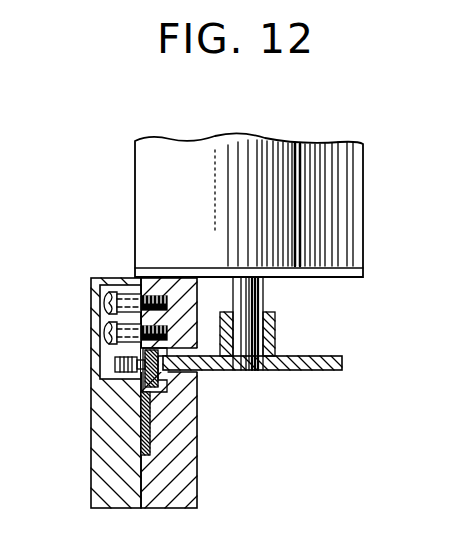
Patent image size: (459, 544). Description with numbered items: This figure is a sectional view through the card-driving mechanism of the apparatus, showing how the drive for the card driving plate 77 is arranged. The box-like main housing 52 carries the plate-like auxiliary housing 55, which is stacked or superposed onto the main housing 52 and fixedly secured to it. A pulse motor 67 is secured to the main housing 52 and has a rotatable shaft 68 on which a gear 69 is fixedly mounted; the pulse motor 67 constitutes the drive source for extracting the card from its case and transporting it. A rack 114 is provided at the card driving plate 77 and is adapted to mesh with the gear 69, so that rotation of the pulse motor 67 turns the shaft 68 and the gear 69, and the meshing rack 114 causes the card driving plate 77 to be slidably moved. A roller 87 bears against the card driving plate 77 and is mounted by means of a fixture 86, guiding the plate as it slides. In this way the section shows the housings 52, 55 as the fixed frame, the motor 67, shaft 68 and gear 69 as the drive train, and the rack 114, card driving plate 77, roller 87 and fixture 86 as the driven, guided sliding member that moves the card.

The main housing 52 is at (183, 481).
The auxiliary housing 55 is at (100, 477).
The pulse motor 67 is at (363, 174).
The rotatable shaft 68 is at (272, 289).
The gear 69 is at (318, 371).
The card driving plate 77 is at (149, 438).
The fixture 86 is at (104, 308).
The roller 87 is at (116, 364).
The rack 114 is at (147, 390).